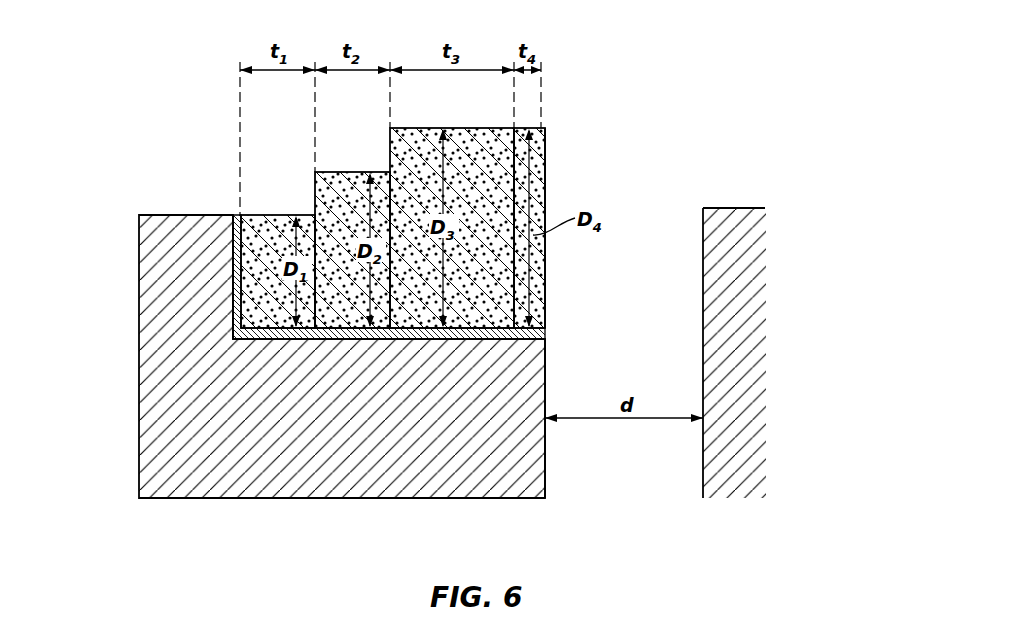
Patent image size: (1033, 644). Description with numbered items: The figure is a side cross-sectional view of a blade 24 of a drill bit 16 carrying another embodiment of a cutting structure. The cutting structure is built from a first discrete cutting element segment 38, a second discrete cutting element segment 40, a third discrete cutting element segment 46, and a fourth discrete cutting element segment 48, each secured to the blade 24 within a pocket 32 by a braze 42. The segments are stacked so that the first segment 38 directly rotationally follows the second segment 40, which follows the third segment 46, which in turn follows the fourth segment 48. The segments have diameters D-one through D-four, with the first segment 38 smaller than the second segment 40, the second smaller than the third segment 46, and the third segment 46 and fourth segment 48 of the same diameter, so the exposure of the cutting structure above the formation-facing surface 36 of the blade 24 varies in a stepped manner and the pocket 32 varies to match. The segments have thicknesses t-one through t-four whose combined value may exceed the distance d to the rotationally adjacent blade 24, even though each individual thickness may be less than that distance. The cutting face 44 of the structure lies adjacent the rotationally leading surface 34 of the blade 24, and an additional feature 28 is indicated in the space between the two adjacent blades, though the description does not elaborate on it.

The drill bit 16 is at (143, 150).
The blade 24 is at (168, 393).
The gap 28 is at (632, 262).
The pocket 32 is at (232, 262).
The rotationally leading surface 34 is at (546, 482).
The formation-facing surface 36 is at (560, 455).
The first discrete cutting element segment 38 is at (262, 300).
The second discrete cutting element segment 40 is at (350, 305).
The braze 42 is at (546, 330).
The cutting face 44 is at (547, 192).
The third discrete cutting element segment 46 is at (477, 300).
The fourth discrete cutting element segment 48 is at (523, 305).